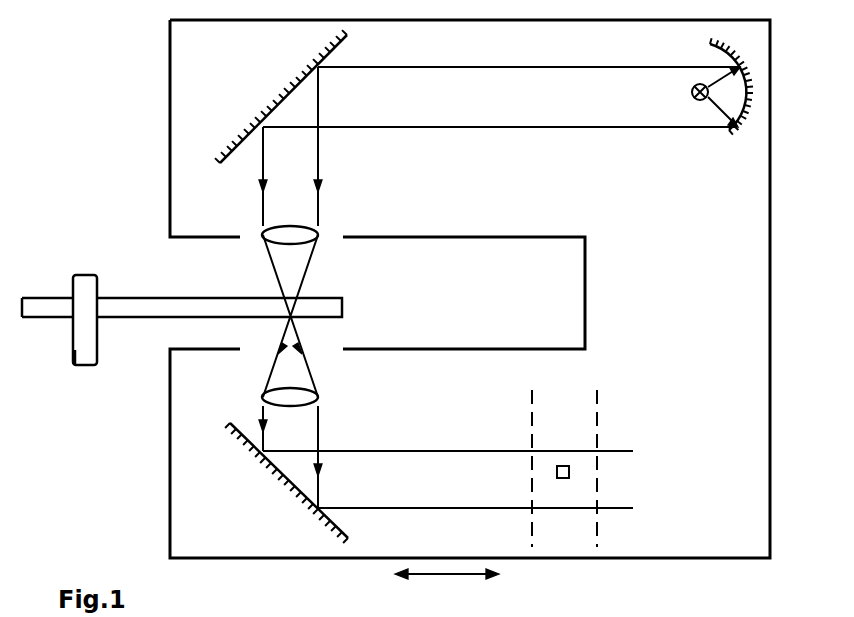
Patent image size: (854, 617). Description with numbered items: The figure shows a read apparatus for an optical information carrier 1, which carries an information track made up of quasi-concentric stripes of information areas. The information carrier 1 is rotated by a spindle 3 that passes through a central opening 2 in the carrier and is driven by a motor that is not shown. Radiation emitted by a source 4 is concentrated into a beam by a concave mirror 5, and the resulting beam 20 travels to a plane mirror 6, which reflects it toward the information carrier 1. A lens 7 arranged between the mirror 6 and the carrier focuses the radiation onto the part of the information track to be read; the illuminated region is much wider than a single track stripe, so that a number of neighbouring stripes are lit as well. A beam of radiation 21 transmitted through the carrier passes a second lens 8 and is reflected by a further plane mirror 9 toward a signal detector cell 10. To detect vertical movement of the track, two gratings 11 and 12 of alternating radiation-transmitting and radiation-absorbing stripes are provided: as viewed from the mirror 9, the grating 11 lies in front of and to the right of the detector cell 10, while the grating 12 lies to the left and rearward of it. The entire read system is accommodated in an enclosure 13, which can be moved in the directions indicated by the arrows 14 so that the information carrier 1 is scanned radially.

The information carrier 1 is at (151, 310).
The central opening 2 is at (98, 300).
The spindle 3 is at (76, 355).
The source 4 is at (692, 92).
The mirror 5 is at (742, 135).
The plane mirror 6 is at (238, 152).
The lens 7 is at (292, 227).
The second lens 8 is at (318, 398).
The plane mirror 9 is at (272, 464).
The signal detector cell 10 is at (569, 472).
The grating 11 is at (530, 406).
The grating 12 is at (602, 396).
The enclosure 13 is at (744, 550).
The arrows 14 is at (447, 577).
The beam 20 is at (549, 125).
The beam of radiation 21 is at (428, 505).